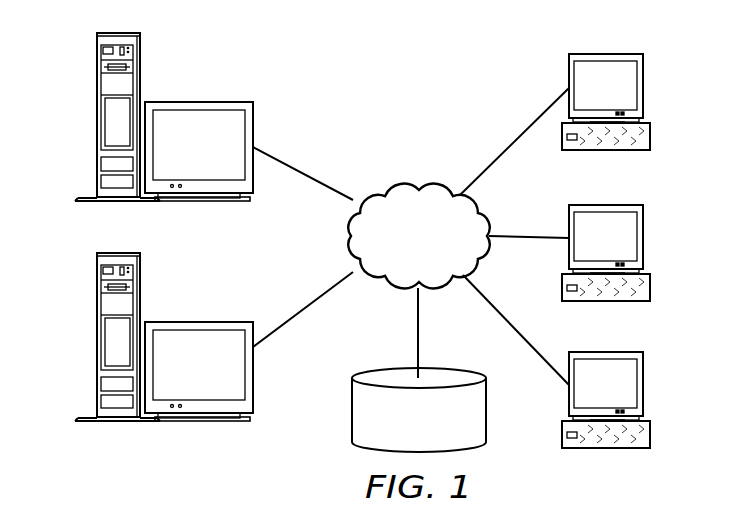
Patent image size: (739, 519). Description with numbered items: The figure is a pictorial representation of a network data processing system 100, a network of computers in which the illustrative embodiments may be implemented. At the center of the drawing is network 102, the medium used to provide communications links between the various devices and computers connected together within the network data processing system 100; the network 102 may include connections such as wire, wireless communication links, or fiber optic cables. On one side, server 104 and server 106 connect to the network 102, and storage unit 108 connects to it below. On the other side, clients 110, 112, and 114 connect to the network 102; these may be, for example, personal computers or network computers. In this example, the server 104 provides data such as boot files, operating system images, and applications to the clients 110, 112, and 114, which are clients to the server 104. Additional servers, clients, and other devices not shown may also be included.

The network data processing system 100 is at (474, 73).
The network 102 is at (388, 183).
The server 104 is at (97, 118).
The server 106 is at (97, 338).
The storage unit 108 is at (352, 425).
The client 110 is at (643, 86).
The client 112 is at (643, 236).
The client 114 is at (643, 385).